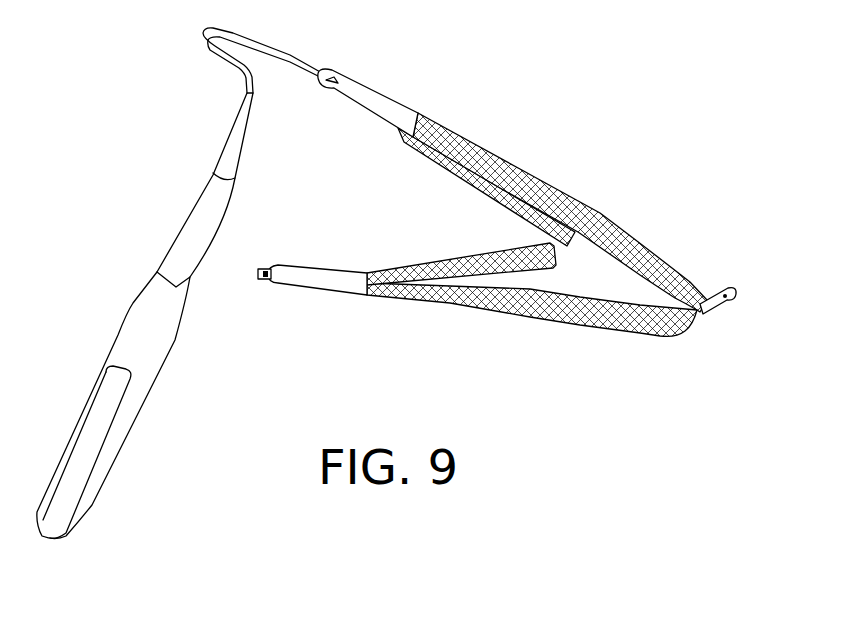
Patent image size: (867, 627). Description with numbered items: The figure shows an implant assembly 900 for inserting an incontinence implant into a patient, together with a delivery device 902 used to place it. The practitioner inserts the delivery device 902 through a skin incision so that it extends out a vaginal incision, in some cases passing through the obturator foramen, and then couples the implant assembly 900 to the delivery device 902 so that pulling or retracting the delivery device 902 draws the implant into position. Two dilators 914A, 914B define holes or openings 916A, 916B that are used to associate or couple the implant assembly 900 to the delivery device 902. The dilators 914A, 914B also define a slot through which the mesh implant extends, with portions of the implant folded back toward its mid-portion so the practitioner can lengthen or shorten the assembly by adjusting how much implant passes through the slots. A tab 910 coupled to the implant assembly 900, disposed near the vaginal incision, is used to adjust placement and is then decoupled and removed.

The implant assembly 900 is at (602, 108).
The delivery device 902 is at (103, 263).
The tab 910 is at (737, 289).
The dilator 914A is at (413, 112).
The dilator 914B is at (352, 296).
The opening 916A is at (336, 74).
The opening 916B is at (263, 280).